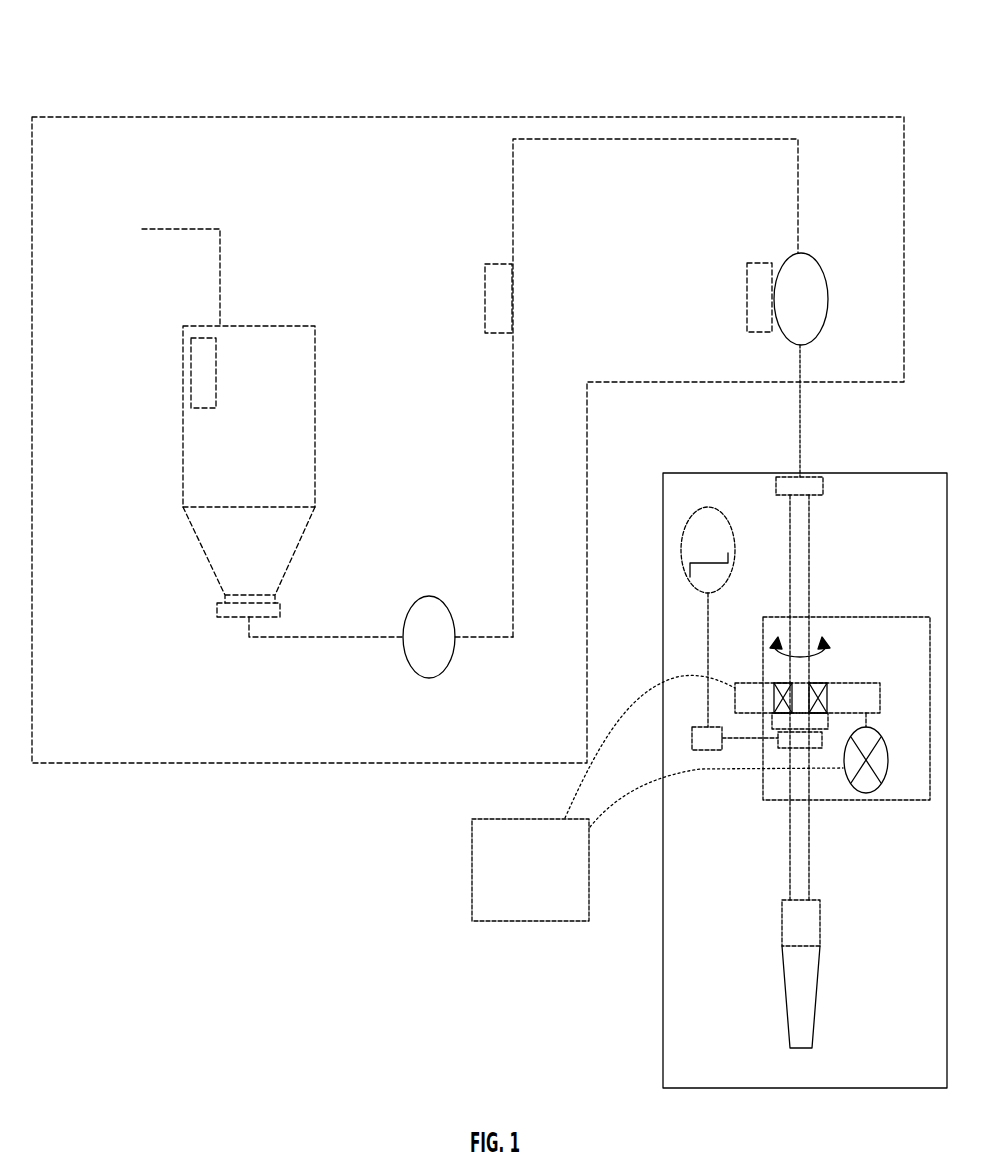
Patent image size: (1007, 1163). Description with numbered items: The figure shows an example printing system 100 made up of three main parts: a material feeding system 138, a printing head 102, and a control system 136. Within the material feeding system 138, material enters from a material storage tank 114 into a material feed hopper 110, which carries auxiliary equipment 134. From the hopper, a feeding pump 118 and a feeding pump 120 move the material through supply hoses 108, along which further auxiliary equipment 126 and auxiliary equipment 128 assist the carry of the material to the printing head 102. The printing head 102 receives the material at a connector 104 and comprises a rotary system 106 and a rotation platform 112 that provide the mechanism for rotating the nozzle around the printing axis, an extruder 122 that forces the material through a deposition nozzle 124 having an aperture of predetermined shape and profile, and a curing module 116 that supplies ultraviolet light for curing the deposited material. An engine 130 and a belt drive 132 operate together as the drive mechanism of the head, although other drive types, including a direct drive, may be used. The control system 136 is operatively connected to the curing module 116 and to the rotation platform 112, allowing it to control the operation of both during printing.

The printing system 100 is at (866, 78).
The printing head 102 is at (663, 930).
The connector 104 is at (818, 490).
The rotary system 106 is at (812, 646).
The supply hoses 108 is at (607, 148).
The material feed hopper 110 is at (262, 470).
The rotation platform 112 is at (893, 615).
The material storage tank 114 is at (122, 273).
The curing module 116 is at (878, 795).
The feeding pump 118 is at (428, 597).
The feeding pump 120 is at (828, 290).
The extruder 122 is at (807, 833).
The deposition nozzle 124 is at (782, 918).
The auxiliary equipment 126 is at (485, 297).
The auxiliary equipment 128 is at (747, 297).
The engine 130 is at (720, 559).
The belt drive 132 is at (735, 750).
The auxiliary equipment 134 is at (216, 357).
The control system 136 is at (570, 903).
The material feeding system 138 is at (621, 93).